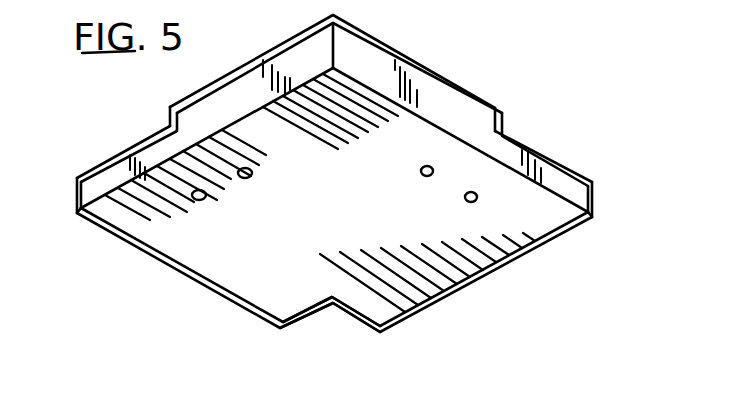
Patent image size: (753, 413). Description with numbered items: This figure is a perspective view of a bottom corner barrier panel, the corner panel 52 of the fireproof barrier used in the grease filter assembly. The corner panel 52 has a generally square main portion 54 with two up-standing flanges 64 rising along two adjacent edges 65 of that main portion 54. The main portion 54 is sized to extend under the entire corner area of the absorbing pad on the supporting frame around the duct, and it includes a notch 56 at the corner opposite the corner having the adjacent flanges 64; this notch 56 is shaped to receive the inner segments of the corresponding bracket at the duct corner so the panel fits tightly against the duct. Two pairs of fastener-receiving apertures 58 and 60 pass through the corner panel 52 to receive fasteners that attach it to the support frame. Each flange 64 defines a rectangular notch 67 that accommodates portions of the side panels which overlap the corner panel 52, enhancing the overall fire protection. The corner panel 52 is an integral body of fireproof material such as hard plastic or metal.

The corner panel 52 is at (547, 63).
The main portion 54 is at (360, 212).
The notch 56 is at (333, 303).
The fastener-receiving apertures 58 is at (203, 200).
The fastener-receiving apertures 60 is at (252, 181).
The up-standing flanges 64 is at (252, 113).
The adjacent edges 65 is at (383, 97).
The rectangular notch 67 is at (168, 121).